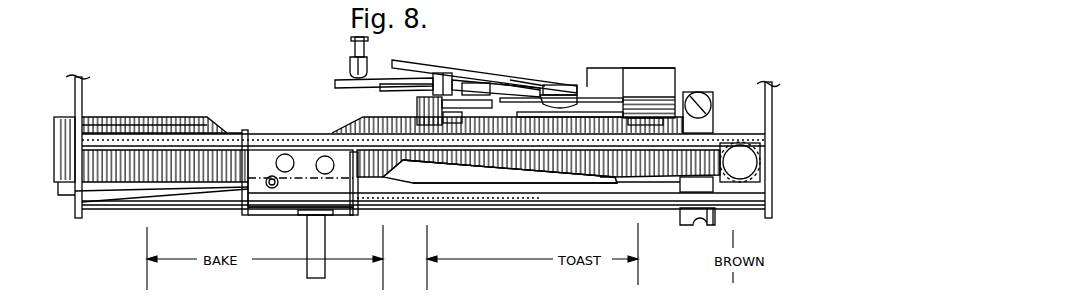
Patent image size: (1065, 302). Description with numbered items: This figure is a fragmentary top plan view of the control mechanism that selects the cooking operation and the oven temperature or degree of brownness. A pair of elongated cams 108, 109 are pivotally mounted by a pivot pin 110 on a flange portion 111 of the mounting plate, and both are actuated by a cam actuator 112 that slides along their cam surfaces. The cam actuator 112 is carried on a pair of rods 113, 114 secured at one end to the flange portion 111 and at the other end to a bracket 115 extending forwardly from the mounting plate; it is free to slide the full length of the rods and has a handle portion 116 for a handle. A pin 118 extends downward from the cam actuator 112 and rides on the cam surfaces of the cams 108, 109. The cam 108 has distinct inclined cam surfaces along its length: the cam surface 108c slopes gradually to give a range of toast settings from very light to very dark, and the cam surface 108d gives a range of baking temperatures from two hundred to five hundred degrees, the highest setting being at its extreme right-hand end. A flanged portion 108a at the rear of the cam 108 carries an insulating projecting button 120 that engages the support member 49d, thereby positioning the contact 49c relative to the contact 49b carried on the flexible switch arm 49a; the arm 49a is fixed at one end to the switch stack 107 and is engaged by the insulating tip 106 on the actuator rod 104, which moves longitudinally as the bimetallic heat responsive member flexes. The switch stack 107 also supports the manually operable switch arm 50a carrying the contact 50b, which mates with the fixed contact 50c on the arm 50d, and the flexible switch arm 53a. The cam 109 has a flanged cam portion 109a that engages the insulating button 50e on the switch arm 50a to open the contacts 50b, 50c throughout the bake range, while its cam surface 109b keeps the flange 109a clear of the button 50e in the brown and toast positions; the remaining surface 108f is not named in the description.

The actuator rod 104 is at (352, 41).
The tip 106 is at (350, 60).
The flexible switch arm 49a is at (335, 83).
The contact 49b is at (397, 83).
The contact 49c is at (408, 62).
The support member 49d is at (440, 70).
The projecting button 120 is at (455, 76).
The button 50e is at (513, 82).
The flanged cam portion 109a is at (527, 80).
The manually operable switch arm 50a is at (540, 84).
The contact 50b is at (583, 95).
The switch stack 107 is at (663, 84).
The flange portion 111 is at (765, 109).
The pivot pin 110 is at (735, 146).
The bracket 115 is at (75, 100).
The rod 114 is at (110, 143).
The rod 113 is at (147, 203).
The pin 118 is at (266, 178).
The flanged portion 108a is at (420, 112).
The fixed contact 50c is at (480, 108).
The arm 50d is at (578, 114).
The cam 109 is at (122, 167).
The cam surface 108d is at (178, 186).
The cam actuator 112 is at (293, 183).
The cam 108 is at (403, 172).
The cam surface 109b is at (431, 162).
The cam surface 108c is at (478, 183).
The slide end portion 108f is at (622, 183).
The handle portion 116 is at (308, 267).
The flexible switch arm 53a is at (713, 218).